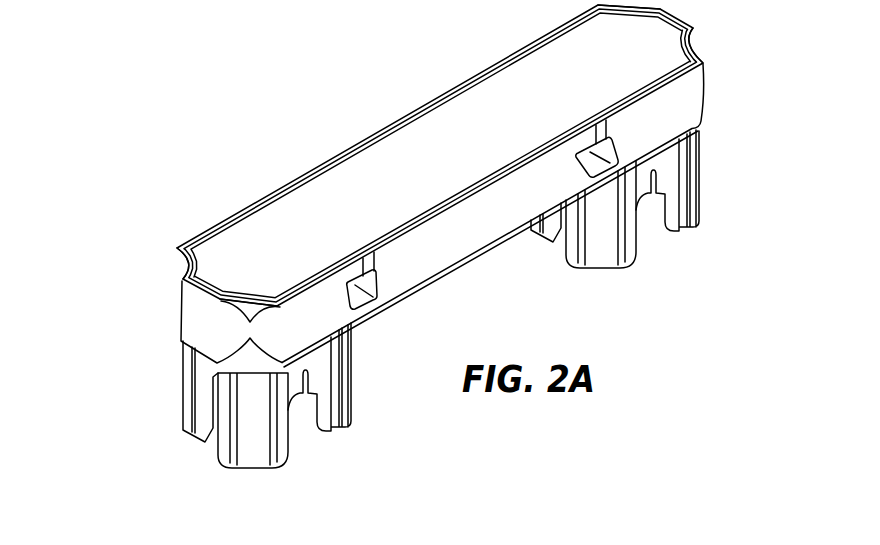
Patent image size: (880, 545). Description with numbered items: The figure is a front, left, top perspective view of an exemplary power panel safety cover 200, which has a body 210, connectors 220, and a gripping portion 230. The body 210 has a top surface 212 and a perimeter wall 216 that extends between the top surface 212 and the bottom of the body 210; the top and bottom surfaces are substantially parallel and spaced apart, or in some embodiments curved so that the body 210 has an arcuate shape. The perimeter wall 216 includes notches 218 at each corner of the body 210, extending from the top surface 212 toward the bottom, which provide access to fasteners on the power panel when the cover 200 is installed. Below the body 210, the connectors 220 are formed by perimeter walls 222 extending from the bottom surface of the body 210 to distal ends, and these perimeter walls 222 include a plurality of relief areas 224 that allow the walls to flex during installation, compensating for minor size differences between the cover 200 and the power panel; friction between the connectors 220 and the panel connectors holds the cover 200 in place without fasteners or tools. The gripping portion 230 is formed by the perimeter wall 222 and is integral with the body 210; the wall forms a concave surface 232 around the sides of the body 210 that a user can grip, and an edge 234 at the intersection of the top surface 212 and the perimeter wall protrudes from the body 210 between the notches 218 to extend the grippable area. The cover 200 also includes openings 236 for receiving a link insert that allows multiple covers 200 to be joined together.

The power panel safety cover 200 is at (430, 258).
The body 210 is at (439, 153).
The top surface 212 is at (467, 117).
The perimeter wall 216 is at (520, 215).
The notches 218 is at (713, 40).
The connectors 220 is at (430, 323).
The perimeter walls 222 is at (325, 372).
The relief areas 224 is at (212, 460).
The gripping portion 230 is at (170, 324).
The concave surface 232 is at (447, 252).
The edge 234 is at (447, 216).
The openings 236 is at (600, 141).